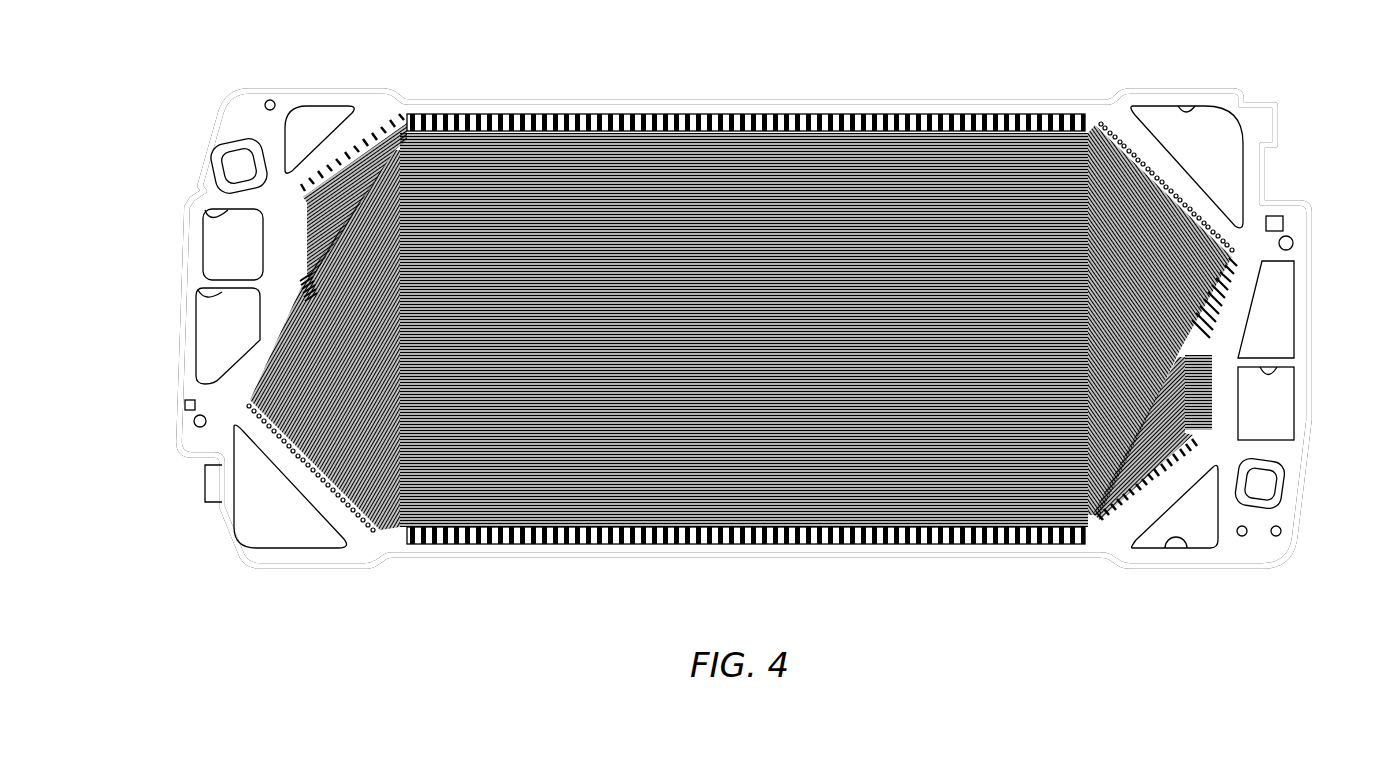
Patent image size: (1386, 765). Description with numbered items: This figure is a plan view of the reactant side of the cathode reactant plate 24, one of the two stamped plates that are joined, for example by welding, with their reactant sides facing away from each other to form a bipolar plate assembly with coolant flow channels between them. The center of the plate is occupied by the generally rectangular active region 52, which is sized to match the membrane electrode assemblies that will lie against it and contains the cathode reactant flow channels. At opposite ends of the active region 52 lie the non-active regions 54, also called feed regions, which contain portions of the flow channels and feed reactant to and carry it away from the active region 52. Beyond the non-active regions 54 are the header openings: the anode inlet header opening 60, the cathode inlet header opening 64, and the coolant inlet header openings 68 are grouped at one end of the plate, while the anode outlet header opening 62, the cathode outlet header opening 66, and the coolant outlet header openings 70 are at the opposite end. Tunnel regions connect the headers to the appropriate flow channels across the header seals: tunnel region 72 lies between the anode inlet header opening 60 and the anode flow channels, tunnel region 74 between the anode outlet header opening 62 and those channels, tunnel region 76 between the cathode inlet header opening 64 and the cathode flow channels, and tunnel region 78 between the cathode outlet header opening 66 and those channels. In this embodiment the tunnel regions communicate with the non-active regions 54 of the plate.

The cathode reactant plate 24 is at (780, 98).
The active region 52 is at (622, 500).
The non-active regions 54 is at (322, 280).
The anode inlet header opening 60 is at (1187, 552).
The anode outlet header opening 62 is at (286, 138).
The cathode inlet header opening 64 is at (297, 487).
The cathode outlet header opening 66 is at (1186, 108).
The coolant inlet header openings 68 is at (204, 292).
The coolant outlet header openings 70 is at (1268, 378).
The tunnel region 72 is at (1126, 537).
The tunnel region 74 is at (386, 116).
The tunnel region 76 is at (383, 547).
The tunnel region 78 is at (1110, 118).